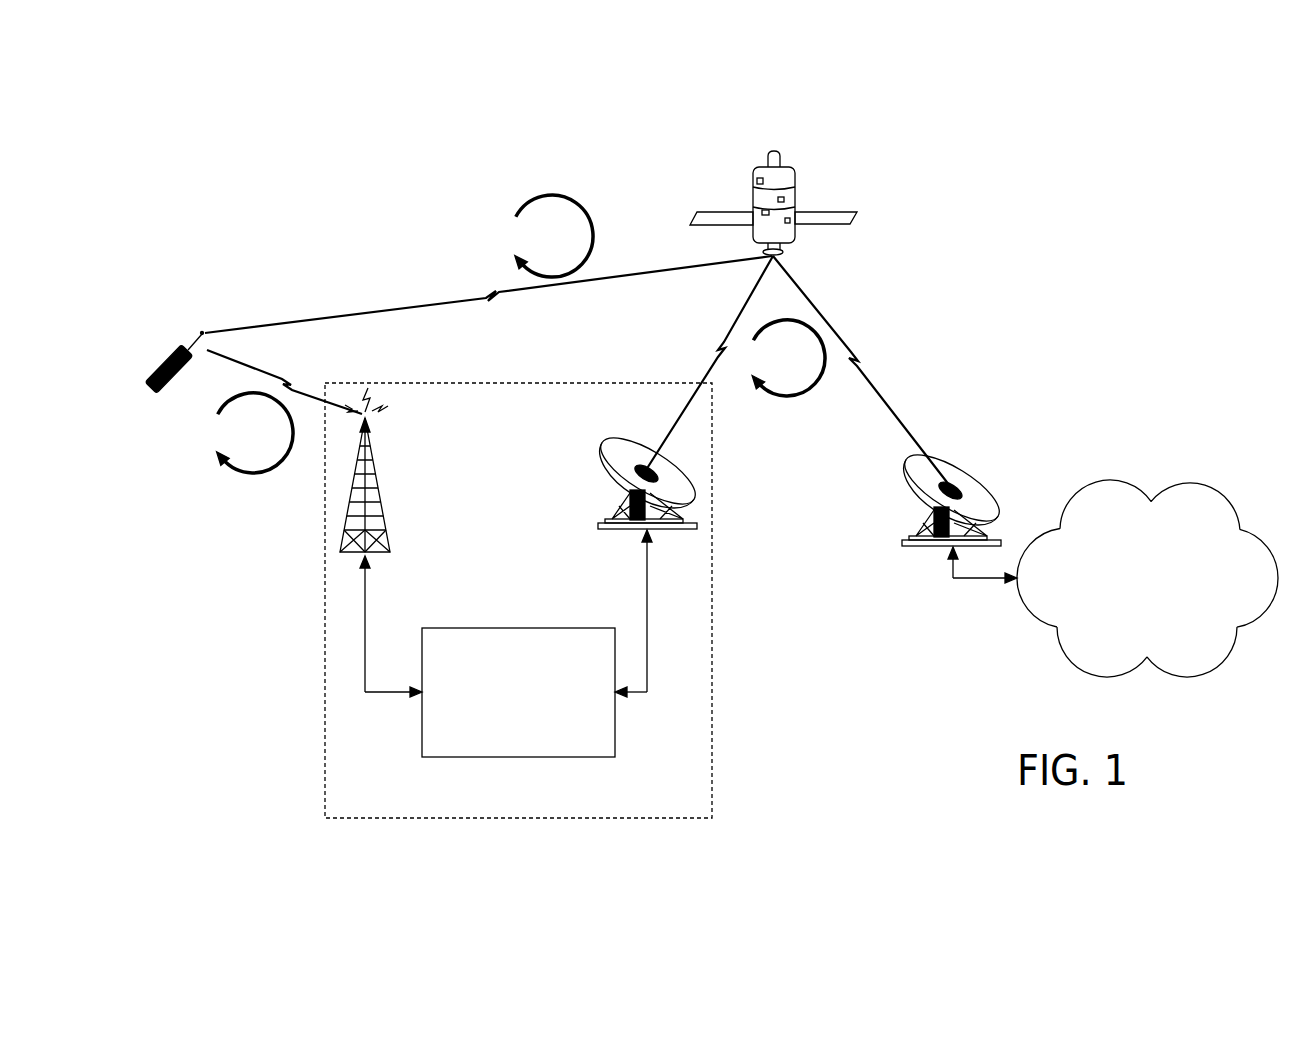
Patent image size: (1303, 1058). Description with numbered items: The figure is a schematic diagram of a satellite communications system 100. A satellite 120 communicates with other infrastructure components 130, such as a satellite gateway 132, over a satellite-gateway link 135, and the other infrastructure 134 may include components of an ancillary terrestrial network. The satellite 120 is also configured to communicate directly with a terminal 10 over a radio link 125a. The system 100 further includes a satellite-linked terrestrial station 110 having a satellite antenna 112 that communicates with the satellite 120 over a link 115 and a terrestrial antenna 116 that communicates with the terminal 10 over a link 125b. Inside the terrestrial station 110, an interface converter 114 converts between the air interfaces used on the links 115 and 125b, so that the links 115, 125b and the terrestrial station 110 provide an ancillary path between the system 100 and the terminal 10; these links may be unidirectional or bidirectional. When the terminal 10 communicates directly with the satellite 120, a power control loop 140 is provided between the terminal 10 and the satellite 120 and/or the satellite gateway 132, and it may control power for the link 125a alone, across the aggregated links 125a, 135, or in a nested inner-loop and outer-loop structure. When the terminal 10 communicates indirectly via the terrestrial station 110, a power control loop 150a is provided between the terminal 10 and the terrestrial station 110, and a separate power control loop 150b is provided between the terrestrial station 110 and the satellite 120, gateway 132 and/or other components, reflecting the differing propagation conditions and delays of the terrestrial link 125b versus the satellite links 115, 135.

The satellite communications system 100 is at (1142, 166).
The terminal 10 is at (155, 400).
The satellite-linked terrestrial station 110 is at (712, 602).
The satellite antenna 112 is at (600, 523).
The interface converter 114 is at (518, 628).
The link 115 is at (697, 383).
The terrestrial antenna 116 is at (373, 482).
The satellite 120 is at (773, 150).
The radio link 125a is at (410, 297).
The link 125b is at (300, 370).
The other infrastructure components 130 is at (1142, 420).
The satellite gateway 132 is at (1013, 528).
The other infrastructure 134 is at (1187, 480).
The satellite-gateway link 135 is at (860, 350).
The power control loop 140 is at (562, 192).
The power control loop 150a is at (257, 475).
The power control loop 150b is at (790, 400).